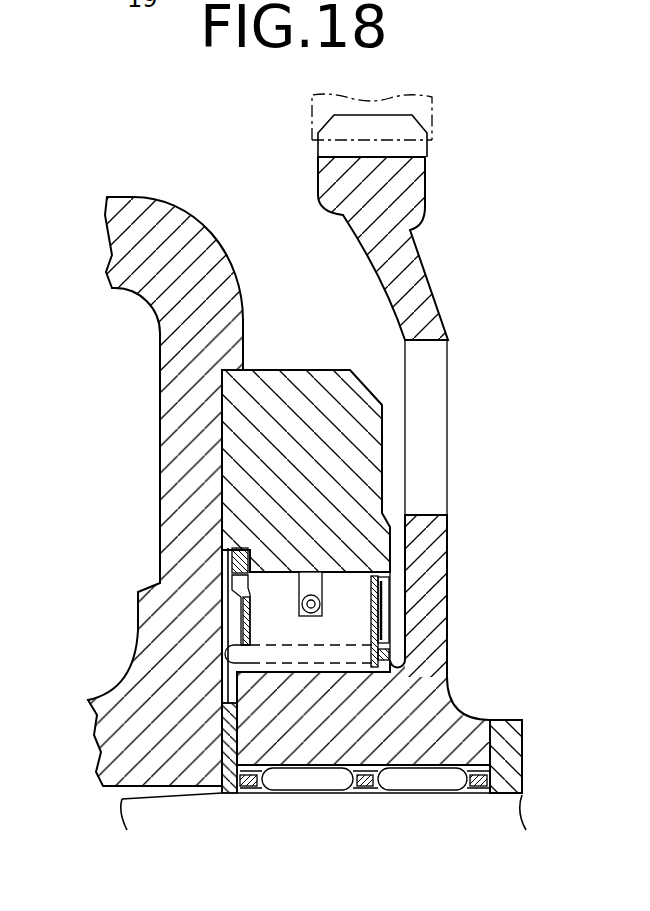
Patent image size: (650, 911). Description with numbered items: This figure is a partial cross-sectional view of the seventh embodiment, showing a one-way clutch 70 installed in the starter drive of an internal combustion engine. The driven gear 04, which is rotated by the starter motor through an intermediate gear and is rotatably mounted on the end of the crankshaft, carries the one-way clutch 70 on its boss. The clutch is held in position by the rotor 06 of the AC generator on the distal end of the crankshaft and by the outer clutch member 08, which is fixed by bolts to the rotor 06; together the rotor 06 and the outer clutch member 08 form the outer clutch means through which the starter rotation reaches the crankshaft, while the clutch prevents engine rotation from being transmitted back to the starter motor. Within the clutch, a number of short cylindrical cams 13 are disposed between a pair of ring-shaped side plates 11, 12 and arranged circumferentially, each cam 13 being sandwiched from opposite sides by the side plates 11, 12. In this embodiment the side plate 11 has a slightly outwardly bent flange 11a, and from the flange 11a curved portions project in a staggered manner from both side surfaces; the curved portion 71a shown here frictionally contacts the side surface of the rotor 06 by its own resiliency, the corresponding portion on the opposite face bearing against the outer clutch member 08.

The driven gear 04 is at (430, 303).
The rotor 06 is at (158, 370).
The outer clutch member 08 is at (298, 380).
The side plate 11 is at (250, 622).
The flange 11a is at (238, 588).
The side plate 12 is at (380, 640).
The cam 13 is at (352, 580).
The one-way clutch 70 is at (383, 617).
The curved portion 71a is at (236, 552).